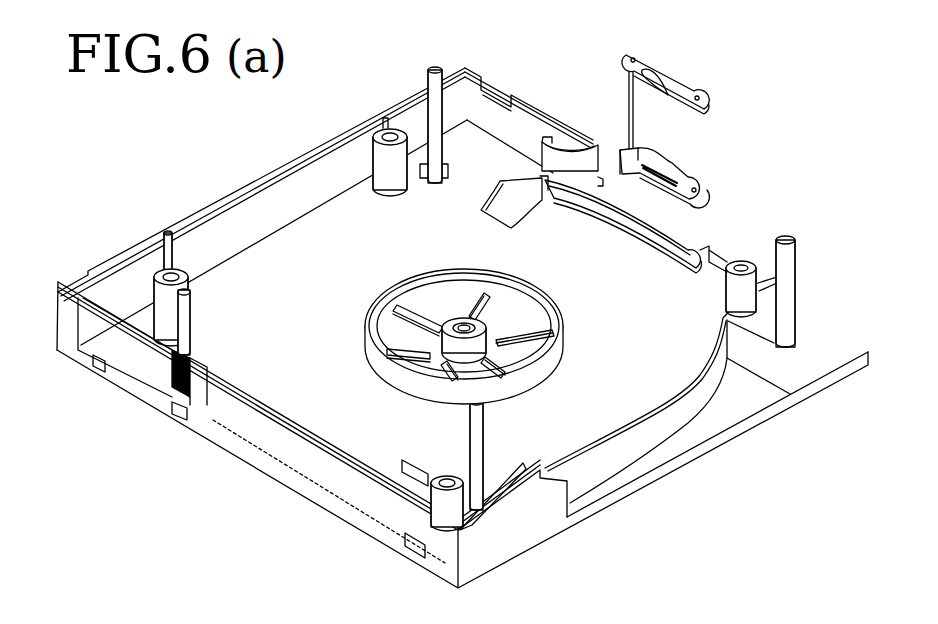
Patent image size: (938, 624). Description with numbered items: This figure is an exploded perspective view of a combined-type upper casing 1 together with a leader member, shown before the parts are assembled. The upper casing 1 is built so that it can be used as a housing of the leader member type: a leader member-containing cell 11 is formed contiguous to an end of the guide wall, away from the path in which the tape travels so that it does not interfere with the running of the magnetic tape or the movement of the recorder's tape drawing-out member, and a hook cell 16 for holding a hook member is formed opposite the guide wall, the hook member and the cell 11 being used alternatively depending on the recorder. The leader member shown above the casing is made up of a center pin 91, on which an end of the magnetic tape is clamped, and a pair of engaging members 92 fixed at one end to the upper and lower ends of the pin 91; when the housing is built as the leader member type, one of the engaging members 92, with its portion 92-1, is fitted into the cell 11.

The upper casing 1 is at (676, 488).
The leader member-containing cell 11 is at (650, 243).
The hook cell 16 is at (562, 140).
The center pin 91 is at (627, 113).
The engaging members 92 is at (697, 85).
The slot of lever arm 92-1 is at (682, 174).